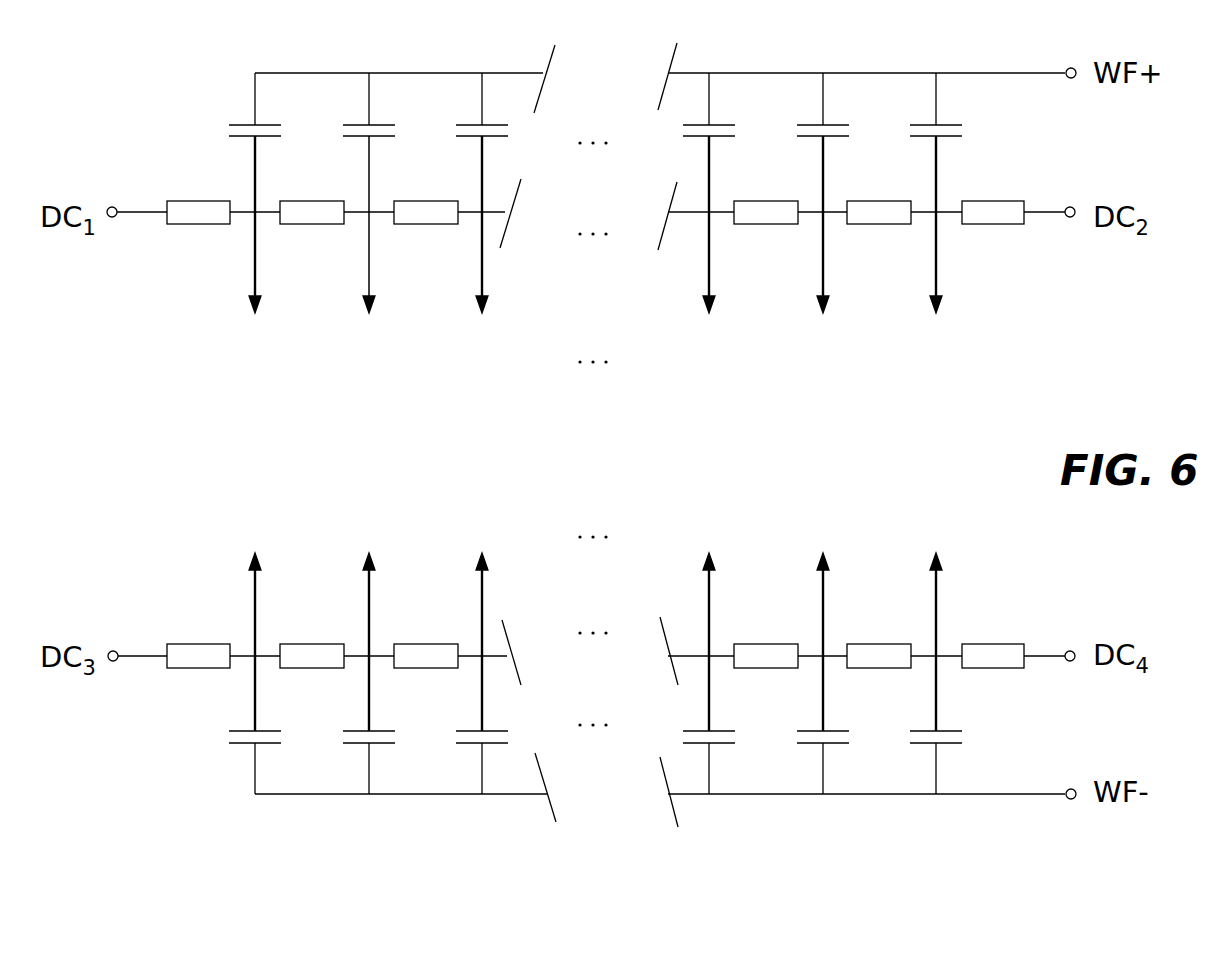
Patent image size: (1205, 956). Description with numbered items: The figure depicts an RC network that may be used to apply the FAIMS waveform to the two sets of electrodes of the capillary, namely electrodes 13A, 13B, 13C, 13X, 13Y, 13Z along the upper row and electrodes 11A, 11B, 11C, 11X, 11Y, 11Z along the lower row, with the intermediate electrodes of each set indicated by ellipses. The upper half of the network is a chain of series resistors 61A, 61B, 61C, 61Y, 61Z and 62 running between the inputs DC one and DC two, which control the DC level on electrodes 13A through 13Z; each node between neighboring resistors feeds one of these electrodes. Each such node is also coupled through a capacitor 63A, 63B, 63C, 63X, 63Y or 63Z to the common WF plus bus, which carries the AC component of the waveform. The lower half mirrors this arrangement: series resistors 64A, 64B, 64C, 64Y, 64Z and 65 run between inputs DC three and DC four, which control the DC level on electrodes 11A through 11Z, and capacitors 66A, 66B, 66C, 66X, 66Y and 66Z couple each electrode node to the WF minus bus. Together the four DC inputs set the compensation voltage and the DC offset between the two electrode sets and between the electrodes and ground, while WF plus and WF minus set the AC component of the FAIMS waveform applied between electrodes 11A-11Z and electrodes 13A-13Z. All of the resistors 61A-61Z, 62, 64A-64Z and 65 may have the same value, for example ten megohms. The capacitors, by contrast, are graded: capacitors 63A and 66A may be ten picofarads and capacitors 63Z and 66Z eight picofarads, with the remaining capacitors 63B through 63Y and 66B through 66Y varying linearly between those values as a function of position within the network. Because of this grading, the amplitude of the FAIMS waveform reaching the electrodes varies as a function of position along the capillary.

The electrode 11A is at (263, 622).
The electrode 11B is at (363, 622).
The electrode 11C is at (491, 622).
The electrode 11X is at (705, 622).
The electrode 11Y is at (830, 622).
The electrode 11Z is at (943, 622).
The electrode 13A is at (263, 253).
The electrode 13B is at (363, 253).
The electrode 13C is at (491, 253).
The electrode 13X is at (705, 253).
The electrode 13Y is at (830, 253).
The electrode 13Z is at (943, 253).
The resistor 61A is at (194, 193).
The resistor 61B is at (312, 193).
The resistor 61C is at (426, 193).
The resistor 61Y is at (766, 193).
The resistor 61Z is at (879, 193).
The resistor 62 is at (993, 193).
The capacitor 63A is at (238, 104).
The capacitor 63B is at (352, 104).
The capacitor 63C is at (466, 104).
The capacitor 63X is at (727, 104).
The capacitor 63Y is at (840, 104).
The capacitor 63Z is at (956, 104).
The resistor 64A is at (195, 677).
The resistor 64B is at (312, 677).
The resistor 64C is at (426, 677).
The resistor 64Y is at (766, 677).
The resistor 64Z is at (879, 677).
The resistor 65 is at (993, 676).
The capacitor 66A is at (239, 762).
The capacitor 66B is at (352, 762).
The capacitor 66C is at (466, 762).
The capacitor 66X is at (727, 762).
The capacitor 66Y is at (840, 762).
The capacitor 66Z is at (956, 762).